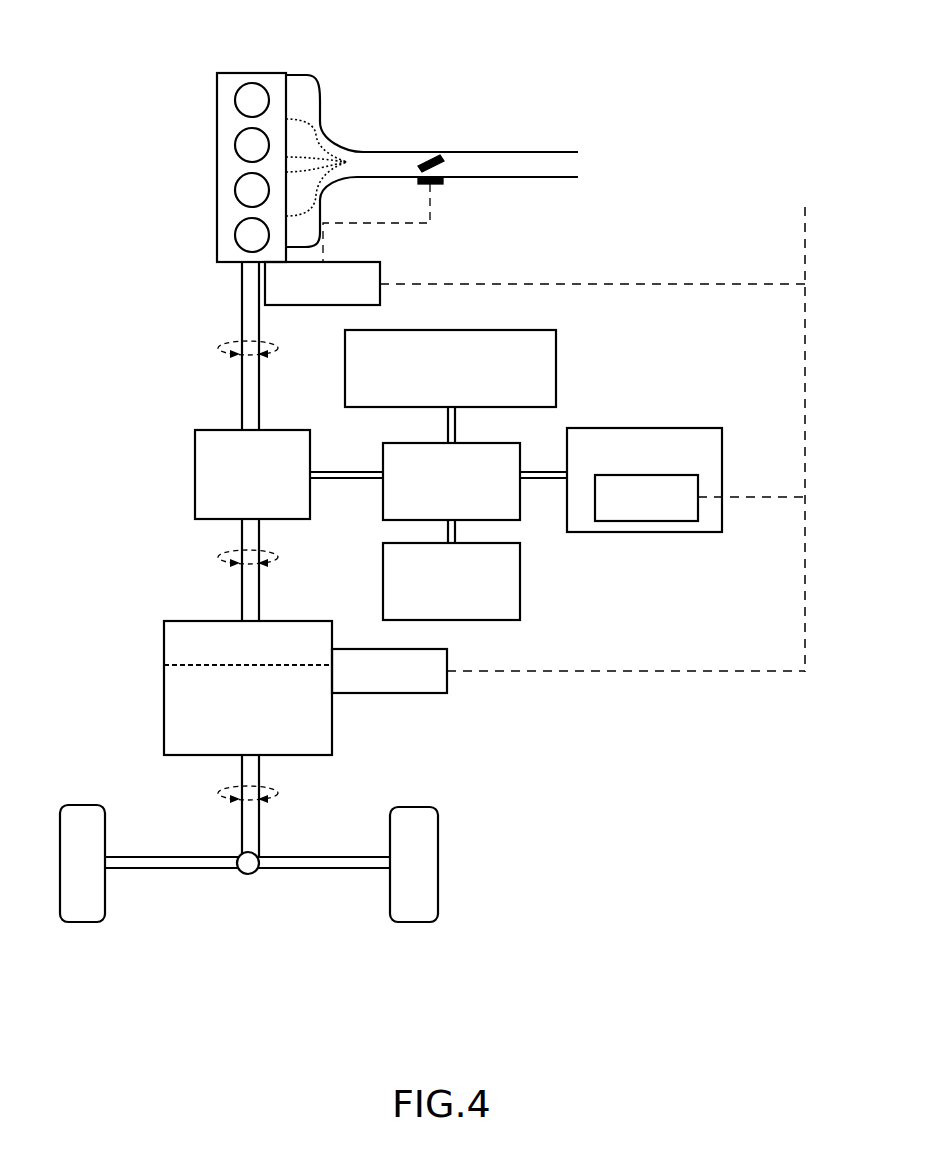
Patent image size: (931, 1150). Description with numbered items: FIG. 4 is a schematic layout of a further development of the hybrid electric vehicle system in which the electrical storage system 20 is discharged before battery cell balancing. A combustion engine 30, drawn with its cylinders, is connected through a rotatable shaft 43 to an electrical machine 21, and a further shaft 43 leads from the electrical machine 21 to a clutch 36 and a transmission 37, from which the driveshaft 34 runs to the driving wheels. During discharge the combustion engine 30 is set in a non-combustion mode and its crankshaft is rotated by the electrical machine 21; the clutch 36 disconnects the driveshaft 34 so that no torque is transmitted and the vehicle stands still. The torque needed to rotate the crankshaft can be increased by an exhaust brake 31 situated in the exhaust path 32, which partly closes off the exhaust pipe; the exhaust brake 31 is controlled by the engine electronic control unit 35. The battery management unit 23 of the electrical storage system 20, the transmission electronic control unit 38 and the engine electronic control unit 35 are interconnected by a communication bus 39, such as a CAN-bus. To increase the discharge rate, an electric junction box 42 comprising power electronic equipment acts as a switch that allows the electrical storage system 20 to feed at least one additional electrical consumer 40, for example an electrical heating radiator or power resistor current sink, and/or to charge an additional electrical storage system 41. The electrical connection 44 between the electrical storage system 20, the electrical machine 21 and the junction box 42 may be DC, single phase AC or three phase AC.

The electrical storage system 20 is at (608, 532).
The electrical machine 21 is at (195, 485).
The battery management unit 23 is at (665, 532).
The combustion engine 30 is at (217, 135).
The exhaust brake 31 is at (432, 157).
The exhaust path 32 is at (335, 150).
The driveshaft 34 is at (178, 868).
The engine electronic control unit 35 is at (380, 270).
The clutch 36 is at (180, 650).
The transmission 37 is at (160, 718).
The transmission electronic control unit 38 is at (447, 686).
The communication bus 39 is at (616, 426).
The additional electrical consumer 40 is at (390, 330).
The additional electrical storage system 41 is at (383, 560).
The electric junction box 42 is at (383, 500).
The rotatable shaft 43 is at (242, 323).
The electrical connection 44 is at (543, 473).